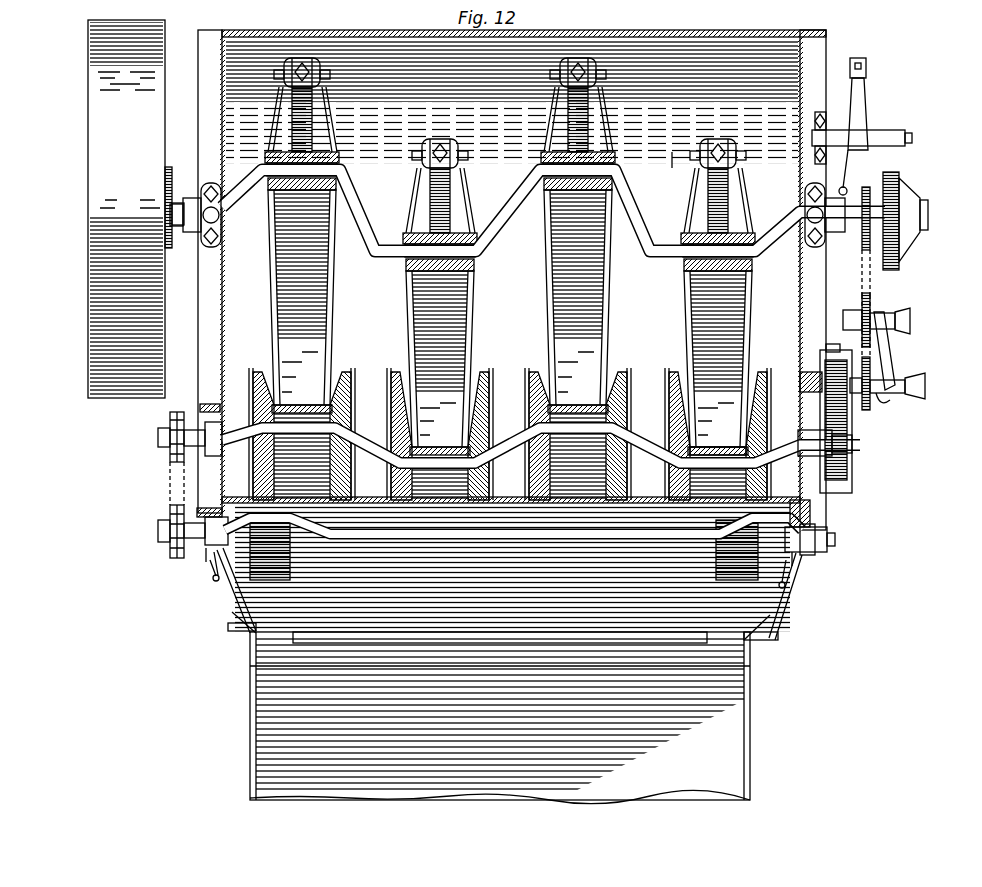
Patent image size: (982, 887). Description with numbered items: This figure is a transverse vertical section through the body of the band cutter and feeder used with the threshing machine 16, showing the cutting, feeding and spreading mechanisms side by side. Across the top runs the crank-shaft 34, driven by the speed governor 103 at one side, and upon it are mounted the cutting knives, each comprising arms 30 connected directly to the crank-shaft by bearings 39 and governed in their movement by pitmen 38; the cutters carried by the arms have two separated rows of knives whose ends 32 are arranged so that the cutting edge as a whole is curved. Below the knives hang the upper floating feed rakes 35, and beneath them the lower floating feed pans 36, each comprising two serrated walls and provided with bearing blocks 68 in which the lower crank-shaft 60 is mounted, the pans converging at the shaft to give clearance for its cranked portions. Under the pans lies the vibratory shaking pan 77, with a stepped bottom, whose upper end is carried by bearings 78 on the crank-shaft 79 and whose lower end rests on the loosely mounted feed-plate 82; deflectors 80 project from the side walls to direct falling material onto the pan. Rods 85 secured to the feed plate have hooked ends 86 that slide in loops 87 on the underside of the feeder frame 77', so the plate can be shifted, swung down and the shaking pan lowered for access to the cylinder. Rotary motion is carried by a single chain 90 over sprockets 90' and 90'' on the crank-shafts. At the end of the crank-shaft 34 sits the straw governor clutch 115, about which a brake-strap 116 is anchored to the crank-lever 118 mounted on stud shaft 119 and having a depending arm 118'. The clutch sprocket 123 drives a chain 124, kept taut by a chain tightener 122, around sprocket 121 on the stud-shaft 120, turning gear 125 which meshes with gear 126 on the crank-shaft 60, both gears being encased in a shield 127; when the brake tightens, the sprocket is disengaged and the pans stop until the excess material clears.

The speed governor 103 is at (92, 183).
The pitman 38 is at (318, 133).
The arm 30 is at (334, 110).
The bearing 39 is at (272, 158).
The cutter end 32 is at (268, 270).
The upper floating feed rake 35 is at (336, 312).
The lower feed pan 36 is at (352, 396).
The bearing block 68 is at (714, 444).
The crank-shaft 34 is at (498, 245).
The chain 90 is at (679, 150).
The crank-shaft 60 is at (372, 430).
The sprocket 90' is at (157, 437).
The sprocket 90'' is at (166, 531).
The deflector 80 is at (215, 470).
The bearing 78 is at (222, 560).
The crank-shaft 79 is at (836, 541).
The shaking pan 77 is at (226, 591).
The feeder frame 77' is at (494, 596).
The hooked end 86 is at (212, 576).
The loop 87 is at (205, 565).
The rod 85 is at (262, 633).
The feed-plate 82 is at (720, 645).
The threshing machine 16 is at (660, 770).
The crank-lever 118 is at (879, 104).
The depending arm 118' is at (866, 172).
The stud shaft 119 is at (906, 138).
The brake-strap 116 is at (900, 170).
The straw governor 115 is at (905, 192).
The sprocket 123 is at (858, 246).
The chain 124 is at (876, 276).
The chain tightener 122 is at (874, 304).
The stud-shaft 120 is at (870, 400).
The sprocket 121 is at (890, 410).
The gear 126 is at (855, 483).
The shield 127 is at (850, 468).
The gear 125 is at (826, 345).